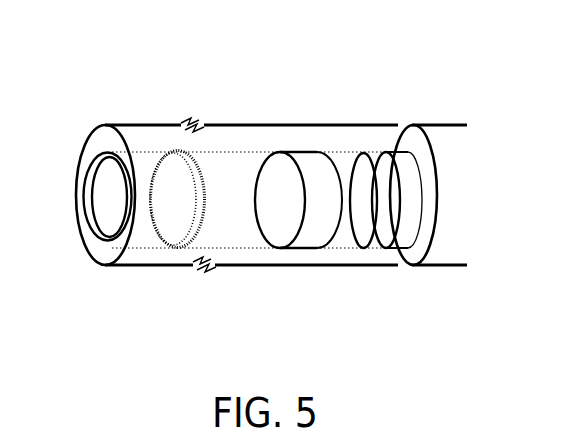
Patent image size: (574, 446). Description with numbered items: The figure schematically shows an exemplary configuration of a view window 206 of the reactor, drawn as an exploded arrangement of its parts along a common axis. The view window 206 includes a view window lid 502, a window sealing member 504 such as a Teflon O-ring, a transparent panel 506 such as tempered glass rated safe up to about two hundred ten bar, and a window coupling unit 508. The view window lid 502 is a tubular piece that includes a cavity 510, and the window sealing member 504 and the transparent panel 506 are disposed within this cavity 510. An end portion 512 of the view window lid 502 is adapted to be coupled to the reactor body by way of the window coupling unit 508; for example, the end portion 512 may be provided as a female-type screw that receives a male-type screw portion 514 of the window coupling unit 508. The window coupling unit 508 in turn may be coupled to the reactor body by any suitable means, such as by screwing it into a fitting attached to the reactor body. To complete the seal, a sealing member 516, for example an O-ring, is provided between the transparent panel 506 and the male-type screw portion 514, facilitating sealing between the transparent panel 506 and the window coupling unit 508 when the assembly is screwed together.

The view window 206 is at (416, 42).
The view window lid 502 is at (136, 116).
The window sealing member 504 is at (177, 256).
The transparent panel 506 is at (305, 145).
The window coupling unit 508 is at (417, 120).
The cavity 510 is at (96, 192).
The end portion 512 is at (380, 117).
The male-type screw portion 514 is at (405, 240).
The sealing member 516 is at (363, 258).